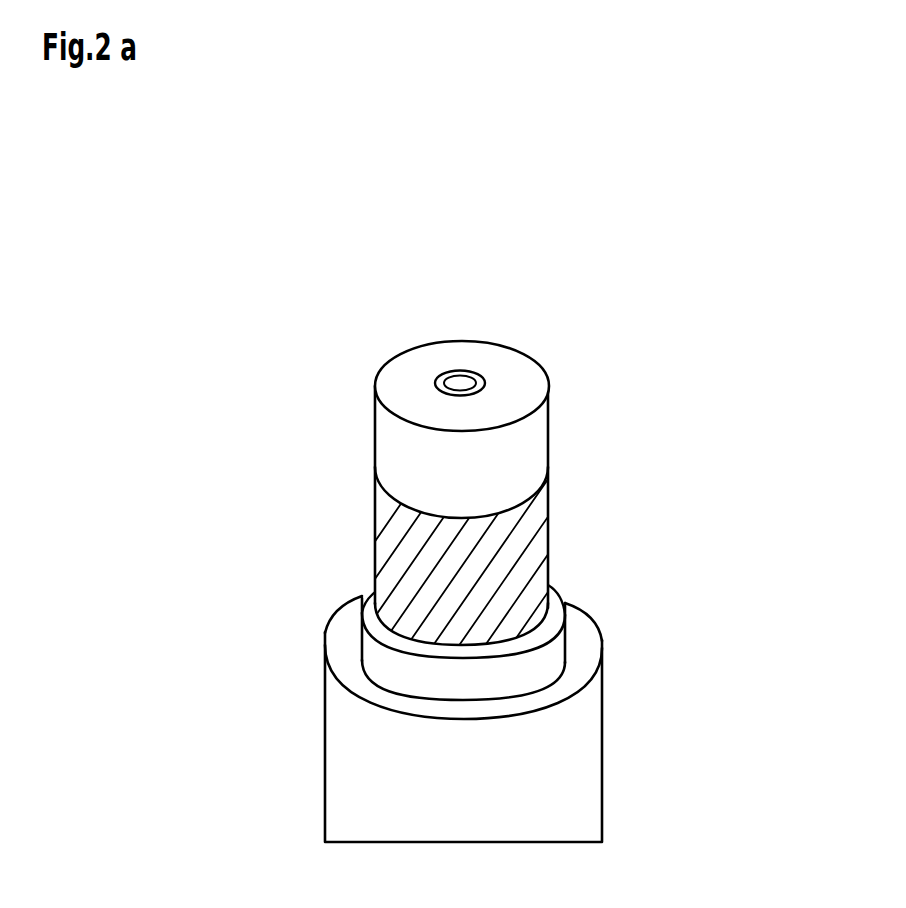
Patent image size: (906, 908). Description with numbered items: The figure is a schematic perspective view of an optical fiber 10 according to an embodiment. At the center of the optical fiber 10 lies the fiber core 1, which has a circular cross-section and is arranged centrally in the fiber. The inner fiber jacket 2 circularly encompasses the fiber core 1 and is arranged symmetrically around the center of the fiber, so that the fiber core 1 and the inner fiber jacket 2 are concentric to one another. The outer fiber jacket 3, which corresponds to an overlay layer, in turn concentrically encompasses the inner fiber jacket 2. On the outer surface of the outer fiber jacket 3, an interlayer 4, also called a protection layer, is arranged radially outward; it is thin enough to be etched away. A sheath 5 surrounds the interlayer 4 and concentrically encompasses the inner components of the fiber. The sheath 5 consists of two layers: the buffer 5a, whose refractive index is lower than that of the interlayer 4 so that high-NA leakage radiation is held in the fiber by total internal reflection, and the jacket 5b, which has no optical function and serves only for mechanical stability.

The optical fiber 10 is at (468, 481).
The fiber core 1 is at (477, 370).
The inner fiber jacket 2 is at (502, 382).
The outer fiber jacket 3 is at (458, 423).
The interlayer 4 is at (447, 547).
The sheath 5 is at (468, 643).
The buffer 5a is at (548, 650).
The jacket 5b is at (347, 735).